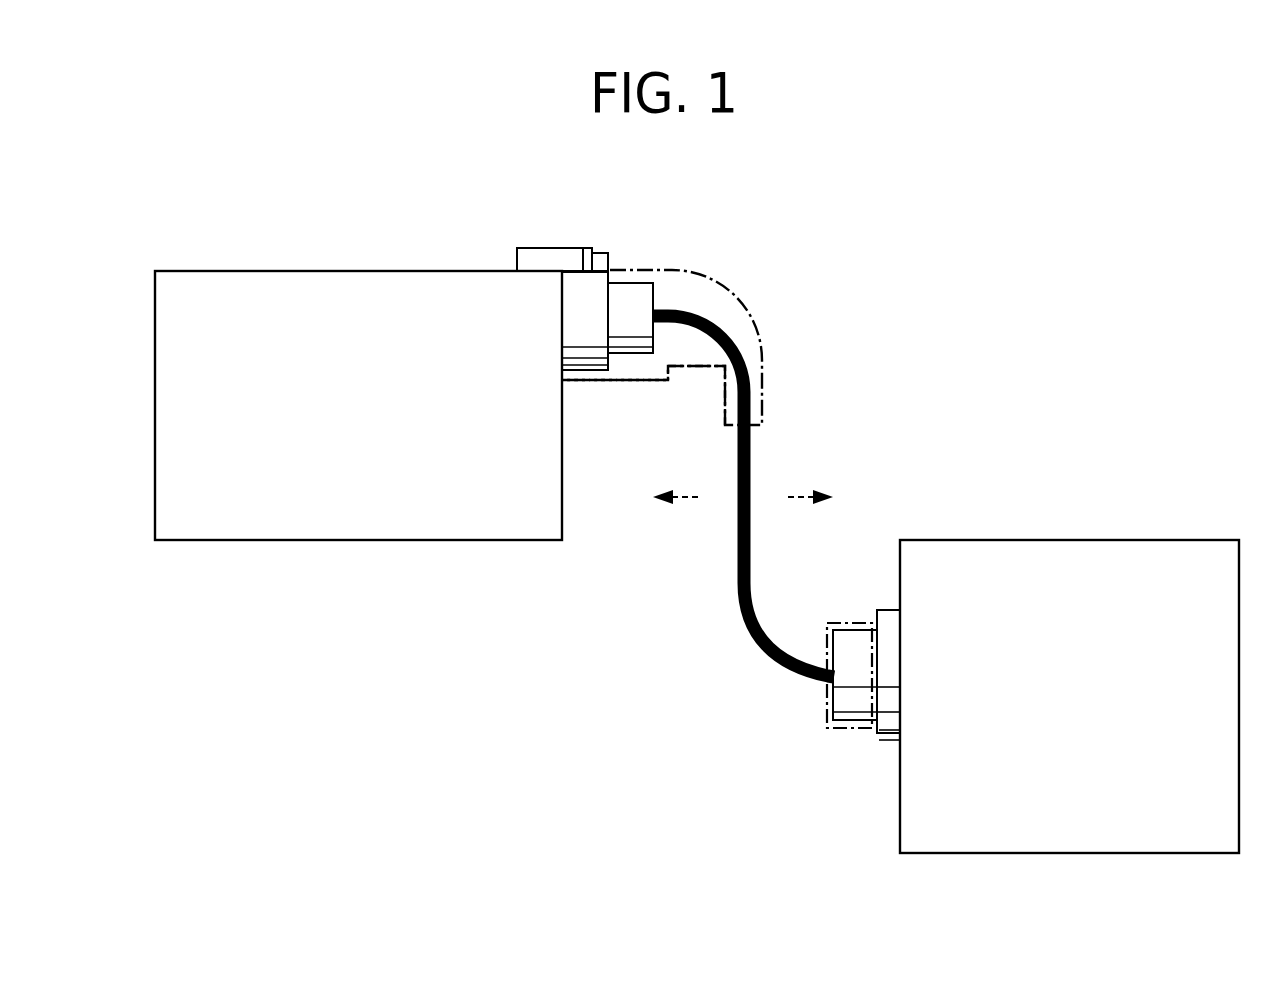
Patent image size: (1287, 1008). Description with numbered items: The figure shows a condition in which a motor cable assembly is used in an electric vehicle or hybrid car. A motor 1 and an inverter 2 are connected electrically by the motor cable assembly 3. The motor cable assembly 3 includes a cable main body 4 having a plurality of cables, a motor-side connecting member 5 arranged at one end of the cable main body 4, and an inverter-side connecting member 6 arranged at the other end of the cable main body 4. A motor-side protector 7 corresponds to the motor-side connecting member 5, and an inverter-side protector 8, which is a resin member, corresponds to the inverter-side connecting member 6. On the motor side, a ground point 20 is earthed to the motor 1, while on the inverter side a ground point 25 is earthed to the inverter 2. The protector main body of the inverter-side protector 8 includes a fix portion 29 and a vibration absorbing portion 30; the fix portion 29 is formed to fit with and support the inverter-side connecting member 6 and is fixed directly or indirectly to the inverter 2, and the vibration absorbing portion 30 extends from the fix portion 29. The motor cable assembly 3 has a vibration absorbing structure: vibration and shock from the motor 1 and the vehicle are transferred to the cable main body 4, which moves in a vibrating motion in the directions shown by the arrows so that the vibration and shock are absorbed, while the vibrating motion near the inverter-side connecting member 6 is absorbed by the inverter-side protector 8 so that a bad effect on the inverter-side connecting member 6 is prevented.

The motor 1 is at (1161, 532).
The inverter 2 is at (347, 262).
The motor cable assembly 3 is at (820, 381).
The cable main body 4 is at (741, 585).
The motor-side connecting member 5 is at (855, 705).
The inverter-side connecting member 6 is at (630, 300).
The motor-side protector 7 is at (827, 708).
The inverter-side protector 8 is at (698, 292).
The ground point 20 is at (887, 612).
The ground point 25 is at (541, 258).
The fix portion 29 is at (612, 384).
The vibration absorbing portion 30 is at (724, 400).